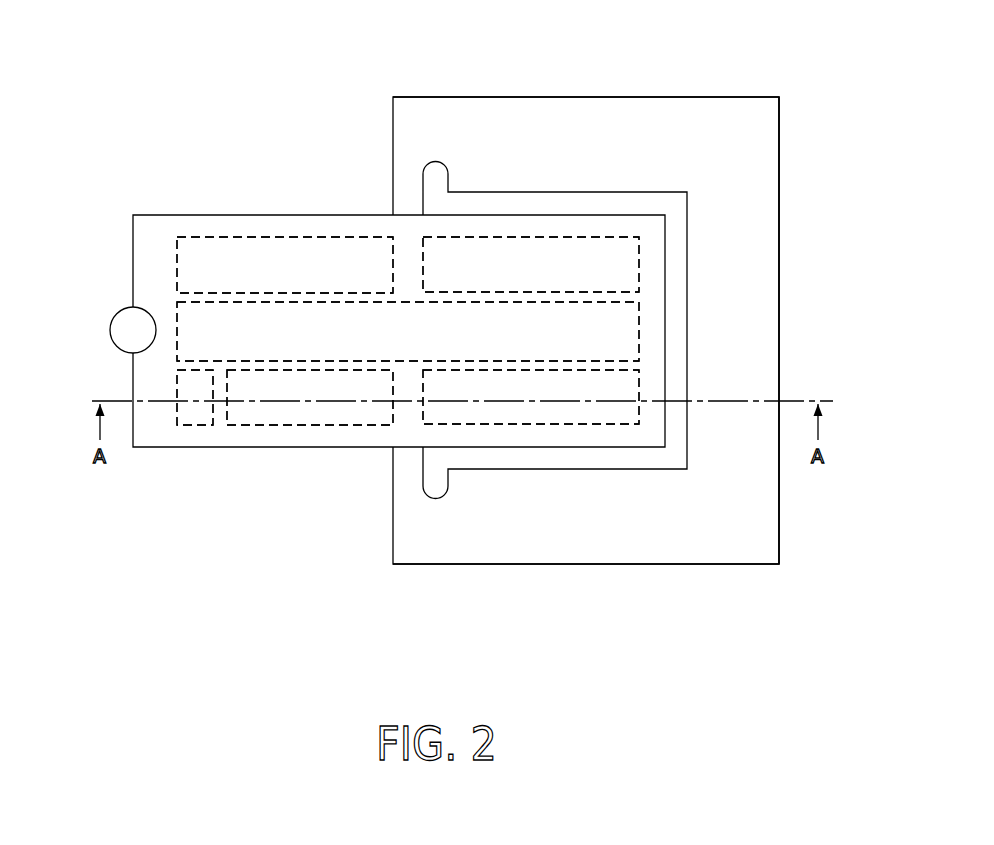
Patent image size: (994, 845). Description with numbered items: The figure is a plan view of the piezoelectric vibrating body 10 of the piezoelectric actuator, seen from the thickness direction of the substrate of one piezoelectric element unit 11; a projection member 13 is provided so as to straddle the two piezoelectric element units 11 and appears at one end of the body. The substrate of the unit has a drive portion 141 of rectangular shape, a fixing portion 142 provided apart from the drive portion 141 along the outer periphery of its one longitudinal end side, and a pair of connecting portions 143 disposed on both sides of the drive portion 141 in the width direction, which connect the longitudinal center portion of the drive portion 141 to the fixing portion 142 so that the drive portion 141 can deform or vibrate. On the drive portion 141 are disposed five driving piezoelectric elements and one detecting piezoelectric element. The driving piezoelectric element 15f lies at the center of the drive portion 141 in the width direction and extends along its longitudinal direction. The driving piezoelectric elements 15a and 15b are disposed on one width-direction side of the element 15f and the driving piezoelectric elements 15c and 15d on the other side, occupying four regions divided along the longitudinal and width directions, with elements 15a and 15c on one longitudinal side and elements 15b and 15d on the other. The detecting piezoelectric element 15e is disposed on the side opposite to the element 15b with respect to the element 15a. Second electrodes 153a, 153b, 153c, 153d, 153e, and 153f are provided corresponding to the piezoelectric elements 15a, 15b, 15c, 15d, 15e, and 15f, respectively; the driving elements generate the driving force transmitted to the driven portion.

The piezoelectric vibrating body 10 is at (601, 74).
The piezoelectric element unit 11 is at (783, 210).
The projection member 13 is at (115, 318).
The drive portion 141 is at (257, 225).
The fixing portion 142 is at (780, 290).
The connecting portion 143 is at (406, 193).
The driving piezoelectric element 15a is at (259, 432).
The driving piezoelectric element 15b is at (569, 430).
The driving piezoelectric element 15c is at (194, 232).
The driving piezoelectric element 15d is at (511, 232).
The detecting piezoelectric element 15e is at (173, 383).
The driving piezoelectric element 15f is at (173, 313).
The second electrode 153a is at (300, 405).
The second electrode 153b is at (490, 407).
The second electrode 153c is at (303, 265).
The second electrode 153d is at (605, 263).
The second electrode 153e is at (193, 412).
The second electrode 153f is at (218, 325).